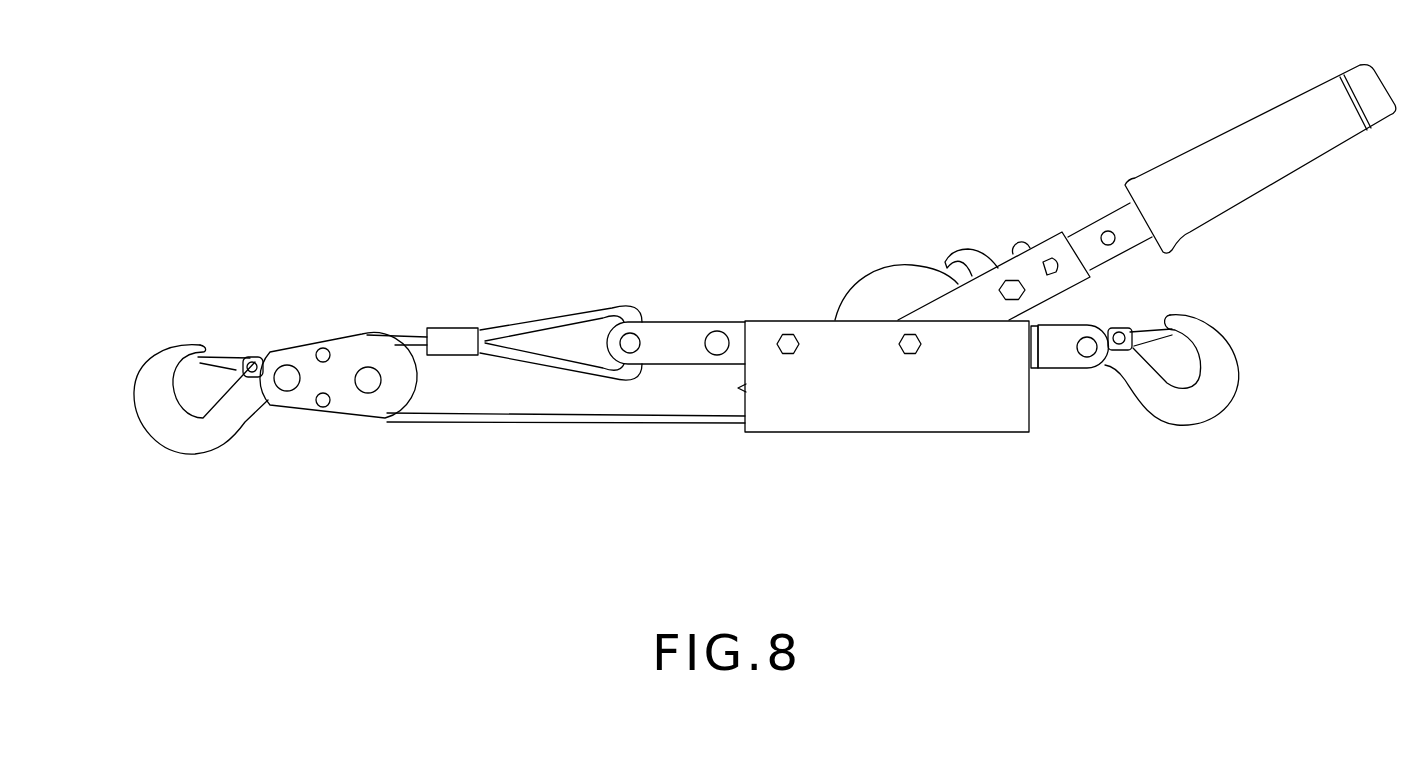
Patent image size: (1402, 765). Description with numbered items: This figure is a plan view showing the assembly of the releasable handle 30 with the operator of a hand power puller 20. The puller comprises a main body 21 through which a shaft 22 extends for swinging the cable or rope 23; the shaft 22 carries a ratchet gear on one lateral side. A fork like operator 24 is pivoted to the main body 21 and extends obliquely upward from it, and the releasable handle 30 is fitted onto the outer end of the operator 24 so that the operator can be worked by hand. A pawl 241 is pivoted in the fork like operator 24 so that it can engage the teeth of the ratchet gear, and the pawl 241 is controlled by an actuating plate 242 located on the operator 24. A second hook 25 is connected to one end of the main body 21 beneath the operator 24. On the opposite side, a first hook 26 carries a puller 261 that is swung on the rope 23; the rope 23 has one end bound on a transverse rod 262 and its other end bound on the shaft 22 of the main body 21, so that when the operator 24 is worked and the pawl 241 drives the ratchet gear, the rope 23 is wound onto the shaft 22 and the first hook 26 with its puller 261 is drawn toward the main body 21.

The hand power puller 20 is at (972, 450).
The main body 21 is at (815, 410).
The shaft 22 is at (912, 350).
The cable or rope 23 is at (543, 420).
The fork like operator 24 is at (1050, 250).
The pawl 241 is at (962, 260).
The actuating plate 242 is at (1018, 245).
The second hook 25 is at (1187, 407).
The first hook 26 is at (220, 428).
The puller 261 is at (340, 398).
The transverse rod 262 is at (633, 345).
The releasable handle 30 is at (1183, 160).